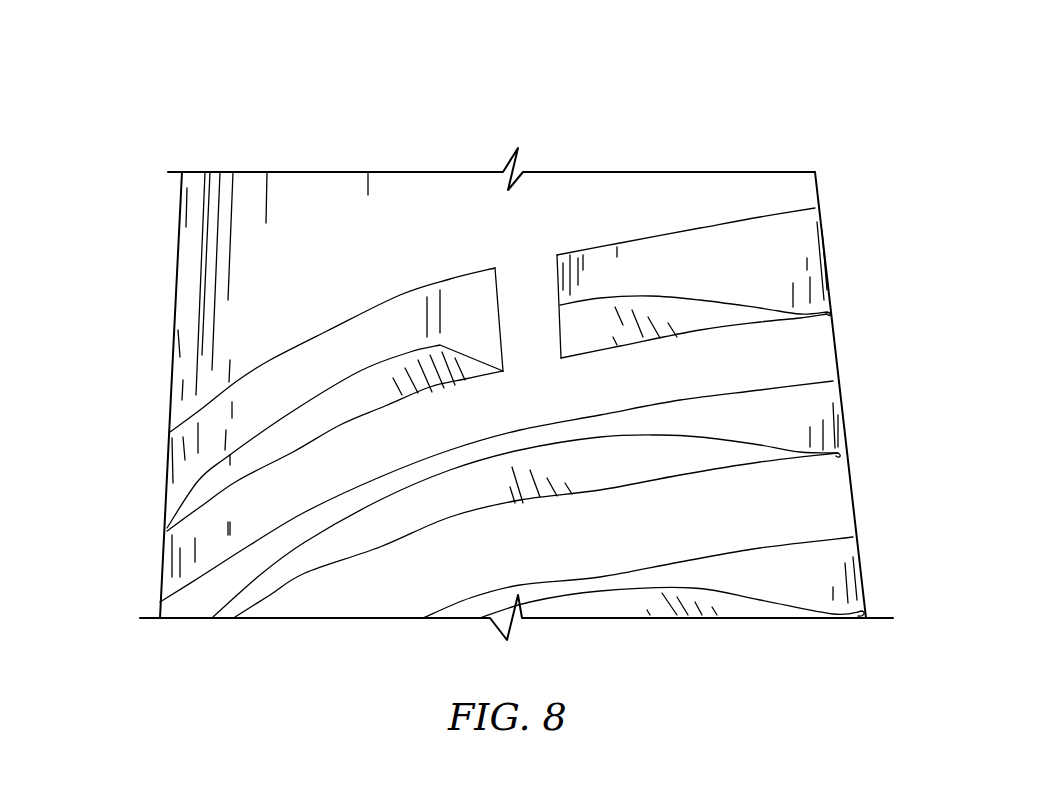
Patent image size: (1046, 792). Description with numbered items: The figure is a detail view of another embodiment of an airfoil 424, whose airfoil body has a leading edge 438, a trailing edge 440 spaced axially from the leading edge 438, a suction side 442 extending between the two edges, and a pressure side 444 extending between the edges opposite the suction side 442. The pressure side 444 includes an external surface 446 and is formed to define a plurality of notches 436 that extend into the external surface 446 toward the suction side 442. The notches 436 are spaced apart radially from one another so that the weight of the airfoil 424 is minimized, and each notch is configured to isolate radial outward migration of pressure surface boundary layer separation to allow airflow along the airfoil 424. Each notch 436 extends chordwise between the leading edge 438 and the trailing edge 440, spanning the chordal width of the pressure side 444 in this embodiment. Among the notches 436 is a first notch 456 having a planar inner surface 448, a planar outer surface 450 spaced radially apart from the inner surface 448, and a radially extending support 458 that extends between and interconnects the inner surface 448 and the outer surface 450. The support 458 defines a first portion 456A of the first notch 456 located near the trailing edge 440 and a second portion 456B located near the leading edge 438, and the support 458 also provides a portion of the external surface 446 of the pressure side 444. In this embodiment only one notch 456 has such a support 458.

The airfoil 424 is at (476, 325).
The plurality of notches 436 is at (70, 425).
The leading edge 438 is at (818, 220).
The trailing edge 440 is at (185, 368).
The suction side 442 is at (172, 206).
The pressure side 444 is at (210, 273).
The external surface 446 is at (308, 180).
The inner surface 448 is at (318, 424).
The outer surface 450 is at (218, 395).
The first notch 456 is at (176, 460).
The first portion of the first notch 456A is at (380, 327).
The second portion of the first notch 456B is at (780, 297).
The radially extending support 458 is at (513, 294).